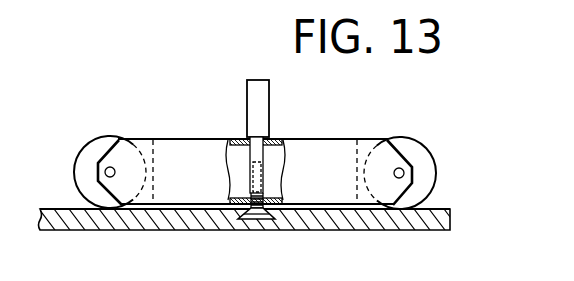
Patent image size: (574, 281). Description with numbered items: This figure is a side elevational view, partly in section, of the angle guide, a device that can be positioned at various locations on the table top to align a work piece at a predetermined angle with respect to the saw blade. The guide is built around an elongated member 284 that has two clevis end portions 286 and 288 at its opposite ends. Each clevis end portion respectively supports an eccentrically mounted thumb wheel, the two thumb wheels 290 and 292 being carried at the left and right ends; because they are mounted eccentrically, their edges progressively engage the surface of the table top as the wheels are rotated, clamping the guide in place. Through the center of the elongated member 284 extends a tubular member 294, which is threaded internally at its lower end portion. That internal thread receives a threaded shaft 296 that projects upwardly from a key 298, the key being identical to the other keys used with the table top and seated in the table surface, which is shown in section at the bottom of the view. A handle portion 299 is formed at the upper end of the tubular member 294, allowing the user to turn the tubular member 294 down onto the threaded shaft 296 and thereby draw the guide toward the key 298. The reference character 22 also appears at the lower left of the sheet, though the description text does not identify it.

The base 22 is at (42, 277).
The elongated member 284 is at (203, 140).
The clevis end portion 286 is at (118, 139).
The clevis end portion 288 is at (399, 148).
The thumb wheel 290 is at (80, 153).
The thumb wheel 292 is at (435, 169).
The tubular member 294 is at (262, 153).
The threaded shaft 296 is at (270, 215).
The key 298 is at (257, 220).
The handle portion 299 is at (259, 80).